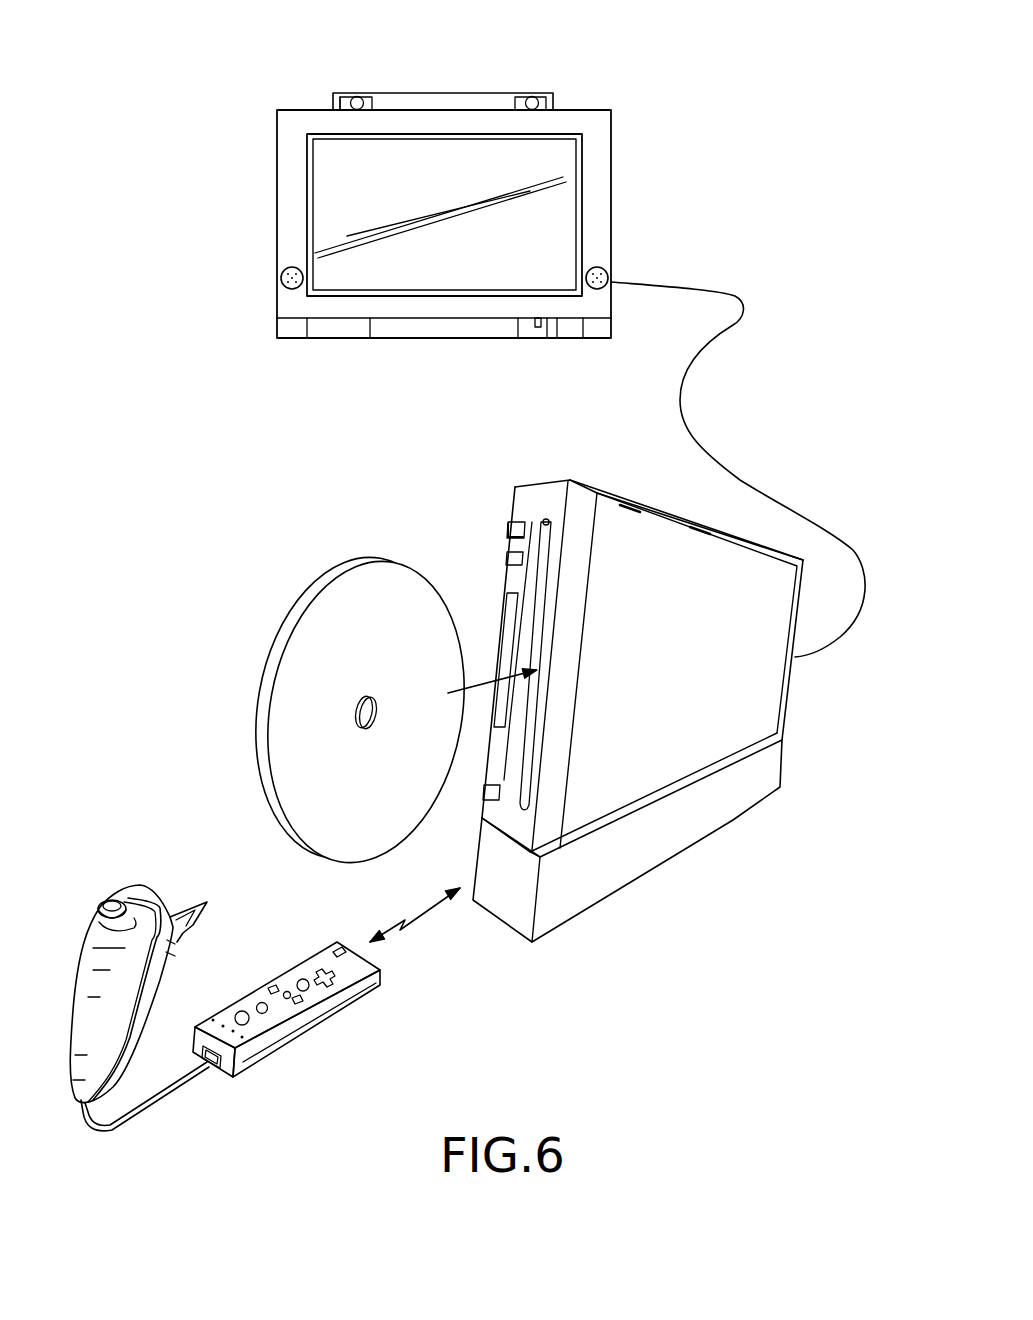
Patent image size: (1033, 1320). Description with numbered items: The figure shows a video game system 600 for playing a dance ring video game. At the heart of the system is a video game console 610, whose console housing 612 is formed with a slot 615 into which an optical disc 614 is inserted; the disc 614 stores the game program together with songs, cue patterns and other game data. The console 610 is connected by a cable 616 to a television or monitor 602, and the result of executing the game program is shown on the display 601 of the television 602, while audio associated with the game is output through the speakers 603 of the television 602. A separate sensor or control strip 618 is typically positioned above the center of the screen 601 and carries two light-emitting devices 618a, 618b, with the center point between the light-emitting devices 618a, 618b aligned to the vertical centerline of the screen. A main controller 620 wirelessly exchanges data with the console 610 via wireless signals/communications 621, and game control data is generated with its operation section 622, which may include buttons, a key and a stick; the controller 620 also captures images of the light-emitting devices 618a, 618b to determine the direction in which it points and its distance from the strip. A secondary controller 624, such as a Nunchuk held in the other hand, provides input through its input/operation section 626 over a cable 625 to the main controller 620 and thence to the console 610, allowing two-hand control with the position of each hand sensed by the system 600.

The video game system 600 is at (330, 452).
The display 601 is at (343, 178).
The television or monitor 602 is at (645, 175).
The speaker 603 is at (281, 278).
The video game console 610 is at (815, 692).
The console housing 612 is at (650, 506).
The optical disc 614 is at (272, 805).
The slot 615 is at (543, 520).
The cable 616 is at (720, 457).
The sensor or control strip 618 is at (443, 93).
The light-emitting device 618a is at (367, 93).
The light-emitting device 618b is at (527, 93).
The controller 620 is at (402, 976).
The wireless signals/communications 621 is at (433, 905).
The operation section 622 is at (327, 985).
The controller 624 is at (118, 868).
The cable 625 is at (143, 1115).
The input/operation section 626 is at (208, 902).